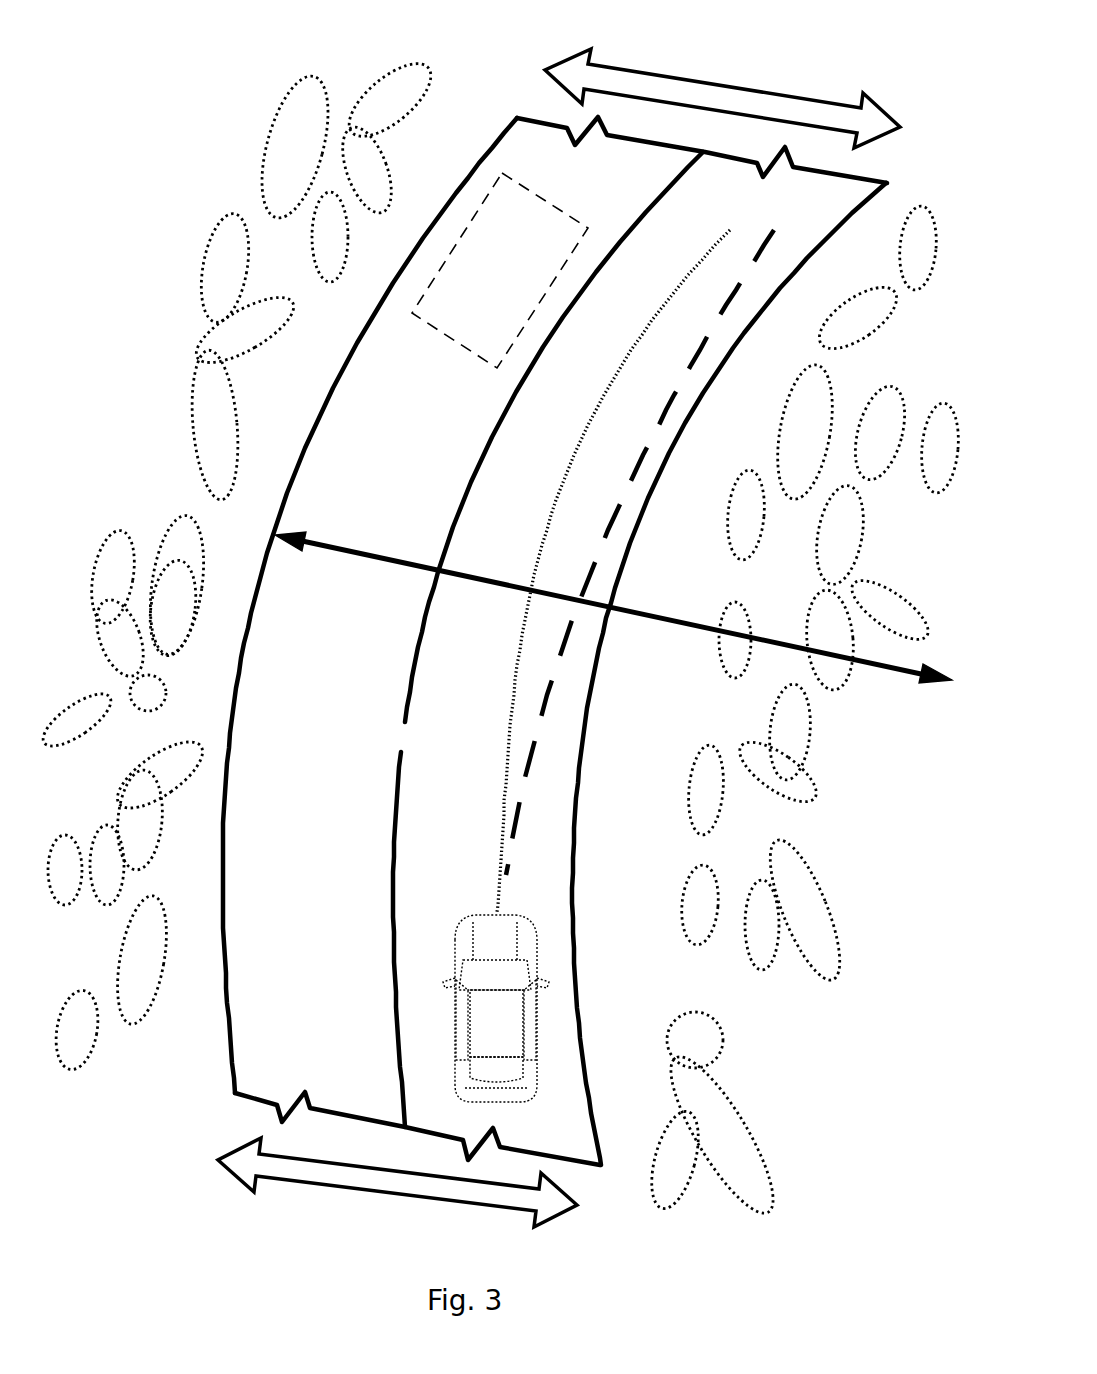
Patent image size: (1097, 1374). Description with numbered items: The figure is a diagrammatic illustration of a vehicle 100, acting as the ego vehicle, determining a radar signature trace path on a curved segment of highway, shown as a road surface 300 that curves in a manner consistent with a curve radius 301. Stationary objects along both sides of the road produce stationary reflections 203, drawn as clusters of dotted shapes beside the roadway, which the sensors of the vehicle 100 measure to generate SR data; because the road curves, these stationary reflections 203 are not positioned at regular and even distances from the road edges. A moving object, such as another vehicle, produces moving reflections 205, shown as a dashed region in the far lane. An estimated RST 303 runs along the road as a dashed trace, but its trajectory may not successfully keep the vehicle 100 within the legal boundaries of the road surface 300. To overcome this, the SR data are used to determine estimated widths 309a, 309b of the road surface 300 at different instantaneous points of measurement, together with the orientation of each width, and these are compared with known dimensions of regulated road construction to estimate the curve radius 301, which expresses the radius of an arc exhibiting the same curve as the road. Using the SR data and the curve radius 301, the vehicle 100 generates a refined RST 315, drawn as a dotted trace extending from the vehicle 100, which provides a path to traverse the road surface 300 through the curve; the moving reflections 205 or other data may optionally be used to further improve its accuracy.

The vehicle 100 is at (516, 1048).
The stationary reflections 203 is at (470, 72).
The moving reflections 205 is at (520, 278).
The road surface 300 is at (420, 756).
The curve radius 301 is at (385, 557).
The estimated RST 303 is at (645, 455).
The estimated width 309a is at (692, 92).
The estimated width 309b is at (326, 1180).
The refined RST 315 is at (520, 648).